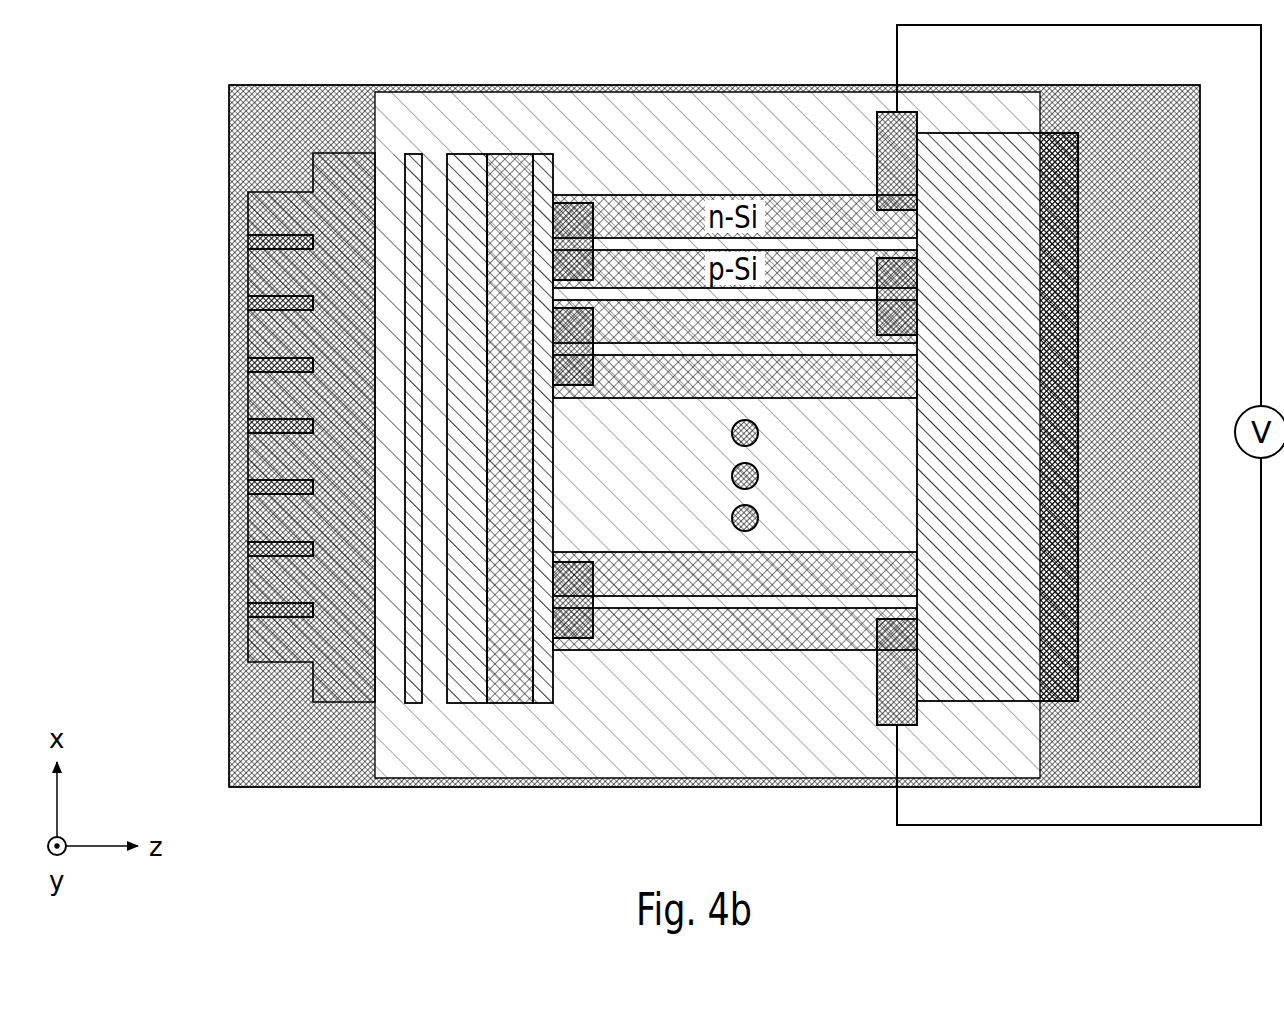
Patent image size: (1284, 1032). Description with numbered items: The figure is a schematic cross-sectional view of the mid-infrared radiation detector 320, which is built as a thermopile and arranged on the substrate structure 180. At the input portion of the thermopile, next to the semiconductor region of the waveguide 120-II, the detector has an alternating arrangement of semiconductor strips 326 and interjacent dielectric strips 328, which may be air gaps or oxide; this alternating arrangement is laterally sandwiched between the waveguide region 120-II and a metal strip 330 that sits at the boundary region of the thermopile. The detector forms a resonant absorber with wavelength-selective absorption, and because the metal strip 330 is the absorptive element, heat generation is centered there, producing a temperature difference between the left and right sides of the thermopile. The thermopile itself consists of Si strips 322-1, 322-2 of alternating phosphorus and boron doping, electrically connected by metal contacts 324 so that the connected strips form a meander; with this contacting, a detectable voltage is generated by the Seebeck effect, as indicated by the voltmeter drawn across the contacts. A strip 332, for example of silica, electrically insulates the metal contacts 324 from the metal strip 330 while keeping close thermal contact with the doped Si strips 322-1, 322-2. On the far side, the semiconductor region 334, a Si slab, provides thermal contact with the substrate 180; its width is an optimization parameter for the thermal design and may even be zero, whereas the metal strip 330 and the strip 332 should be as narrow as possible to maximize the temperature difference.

The mid-infrared radiation detector 320 is at (272, 45).
The substrate structure 180 is at (616, 760).
The waveguide 120-II is at (207, 449).
The dielectric strips 328 is at (392, 148).
The semiconductor strips 326 is at (414, 712).
The metal strip 330 is at (512, 712).
The strip 332 is at (540, 156).
The Si strip 322-1 is at (720, 651).
The Si strip 322-2 is at (823, 552).
The metal contacts 324 is at (573, 202).
The semiconductor region 334 is at (987, 132).